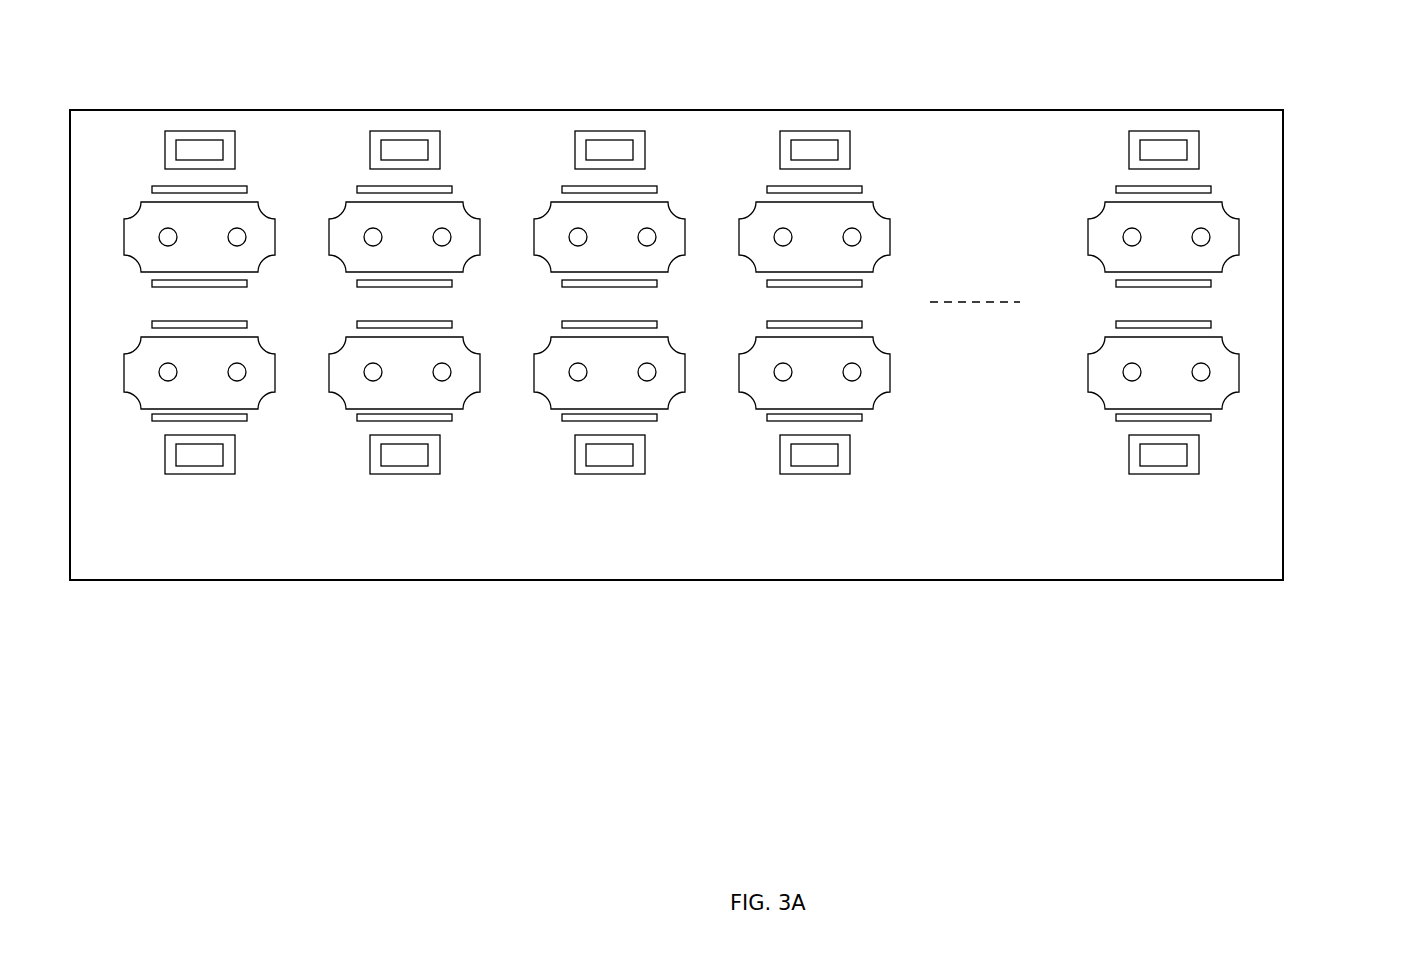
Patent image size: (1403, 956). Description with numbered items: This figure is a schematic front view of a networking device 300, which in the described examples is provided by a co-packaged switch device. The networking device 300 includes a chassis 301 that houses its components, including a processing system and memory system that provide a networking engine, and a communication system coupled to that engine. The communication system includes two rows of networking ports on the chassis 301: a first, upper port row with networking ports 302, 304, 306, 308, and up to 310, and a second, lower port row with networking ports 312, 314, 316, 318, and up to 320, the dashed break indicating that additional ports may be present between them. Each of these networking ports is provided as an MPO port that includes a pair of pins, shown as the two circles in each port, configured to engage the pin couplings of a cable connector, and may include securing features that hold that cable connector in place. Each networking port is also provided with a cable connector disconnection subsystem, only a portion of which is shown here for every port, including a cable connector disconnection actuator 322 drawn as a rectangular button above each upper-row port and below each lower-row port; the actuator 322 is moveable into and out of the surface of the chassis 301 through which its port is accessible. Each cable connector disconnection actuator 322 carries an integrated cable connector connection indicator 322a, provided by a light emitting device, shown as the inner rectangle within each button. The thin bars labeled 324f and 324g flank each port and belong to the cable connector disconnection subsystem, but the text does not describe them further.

The networking device 300 is at (676, 345).
The chassis 301 is at (1283, 110).
The networking port 302 is at (138, 213).
The networking port 304 is at (343, 213).
The networking port 306 is at (548, 213).
The networking port 308 is at (753, 213).
The networking port 310 is at (1102, 213).
The networking port 312 is at (138, 350).
The networking port 314 is at (343, 350).
The networking port 316 is at (548, 350).
The networking port 318 is at (758, 338).
The networking port 320 is at (1100, 350).
The cable connector disconnection actuator 322 is at (233, 130).
The cable connector connection indicator 322a is at (200, 138).
The guide rail / connector flange 324f is at (165, 185).
The guide rail / connector flange 324g is at (153, 283).